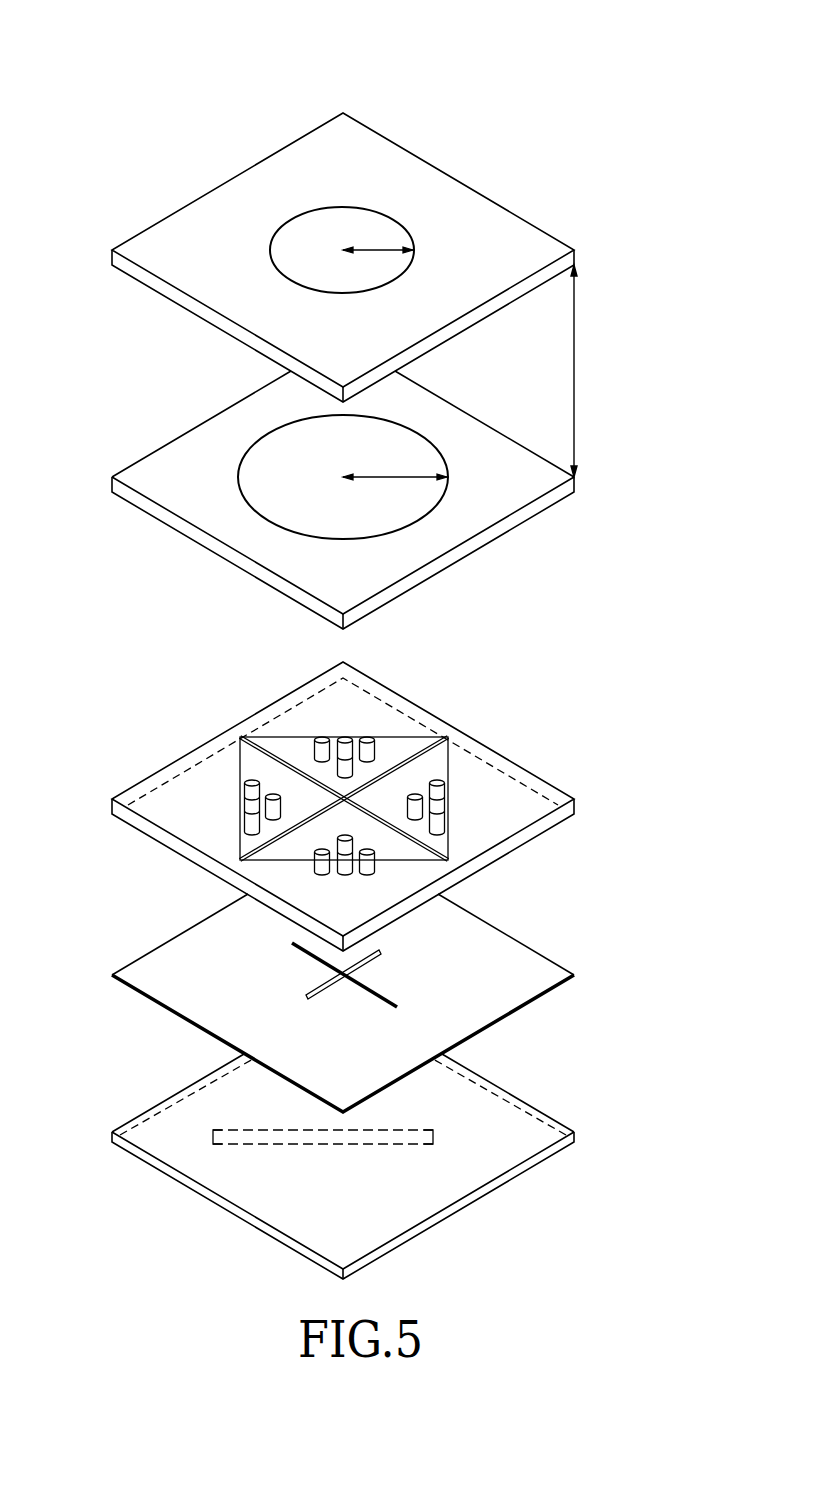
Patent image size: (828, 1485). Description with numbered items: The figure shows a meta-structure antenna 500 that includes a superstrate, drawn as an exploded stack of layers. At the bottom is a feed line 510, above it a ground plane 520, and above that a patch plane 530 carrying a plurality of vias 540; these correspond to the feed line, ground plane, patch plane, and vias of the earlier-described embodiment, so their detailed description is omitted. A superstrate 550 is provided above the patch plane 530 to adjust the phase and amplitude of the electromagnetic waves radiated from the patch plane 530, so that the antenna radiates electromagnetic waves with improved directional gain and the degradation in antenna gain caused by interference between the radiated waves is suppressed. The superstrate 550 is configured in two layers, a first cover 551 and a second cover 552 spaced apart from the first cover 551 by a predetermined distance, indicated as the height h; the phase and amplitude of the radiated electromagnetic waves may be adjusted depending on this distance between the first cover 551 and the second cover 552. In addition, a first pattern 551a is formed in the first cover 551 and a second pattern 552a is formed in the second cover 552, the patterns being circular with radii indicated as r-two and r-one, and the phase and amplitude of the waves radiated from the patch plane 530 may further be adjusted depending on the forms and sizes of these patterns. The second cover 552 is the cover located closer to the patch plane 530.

The meta-structure antenna 500 is at (468, 67).
The feed line 510 is at (213, 1137).
The ground plane 520 is at (172, 937).
The patch plane 530 is at (238, 768).
The plurality of vias 540 is at (281, 808).
The superstrate 550 is at (609, 495).
The first cover 551 is at (470, 323).
The first pattern 551a is at (293, 235).
The second cover 552 is at (507, 528).
The second pattern 552a is at (265, 465).